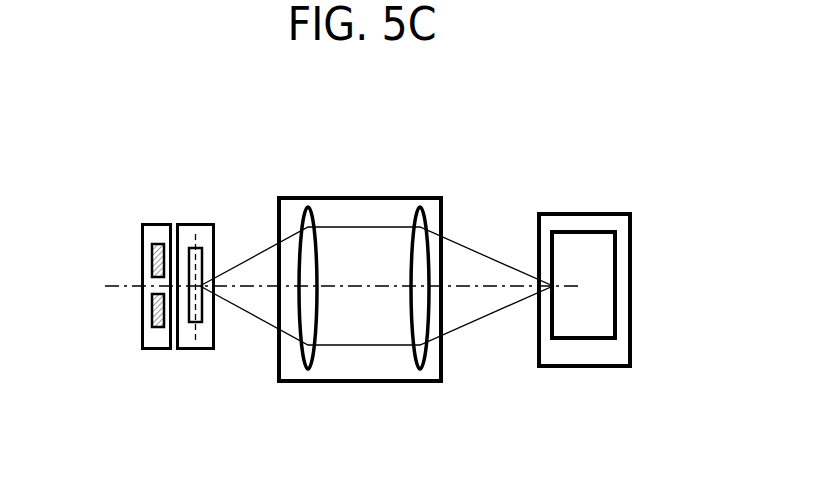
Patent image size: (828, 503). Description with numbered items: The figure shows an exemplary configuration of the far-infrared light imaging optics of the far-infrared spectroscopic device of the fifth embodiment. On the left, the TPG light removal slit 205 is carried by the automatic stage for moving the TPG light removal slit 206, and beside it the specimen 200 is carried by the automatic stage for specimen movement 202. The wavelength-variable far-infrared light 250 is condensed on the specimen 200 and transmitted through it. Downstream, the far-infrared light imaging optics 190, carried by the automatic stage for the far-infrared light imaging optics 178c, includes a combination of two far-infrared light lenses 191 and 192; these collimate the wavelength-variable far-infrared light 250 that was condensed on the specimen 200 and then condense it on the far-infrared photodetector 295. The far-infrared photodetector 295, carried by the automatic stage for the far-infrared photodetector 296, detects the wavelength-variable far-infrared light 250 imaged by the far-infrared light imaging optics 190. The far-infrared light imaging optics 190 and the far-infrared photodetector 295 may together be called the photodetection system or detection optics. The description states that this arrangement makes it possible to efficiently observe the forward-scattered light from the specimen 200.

The far-infrared light imaging optics 190 is at (373, 266).
The far-infrared light lens 191 is at (305, 206).
The far-infrared light lens 192 is at (421, 252).
The automatic stage for the far-infrared light imaging optics 178c is at (417, 377).
The specimen 200 is at (206, 313).
The automatic stage for specimen movement 202 is at (200, 223).
The TPG light removal slit 205 is at (152, 323).
The automatic stage for moving the TPG light removal slit 206 is at (148, 223).
The wavelength-variable far-infrared light 250 is at (480, 250).
The far-infrared photodetector 295 is at (580, 230).
The automatic stage for the far-infrared photodetector 296 is at (610, 368).